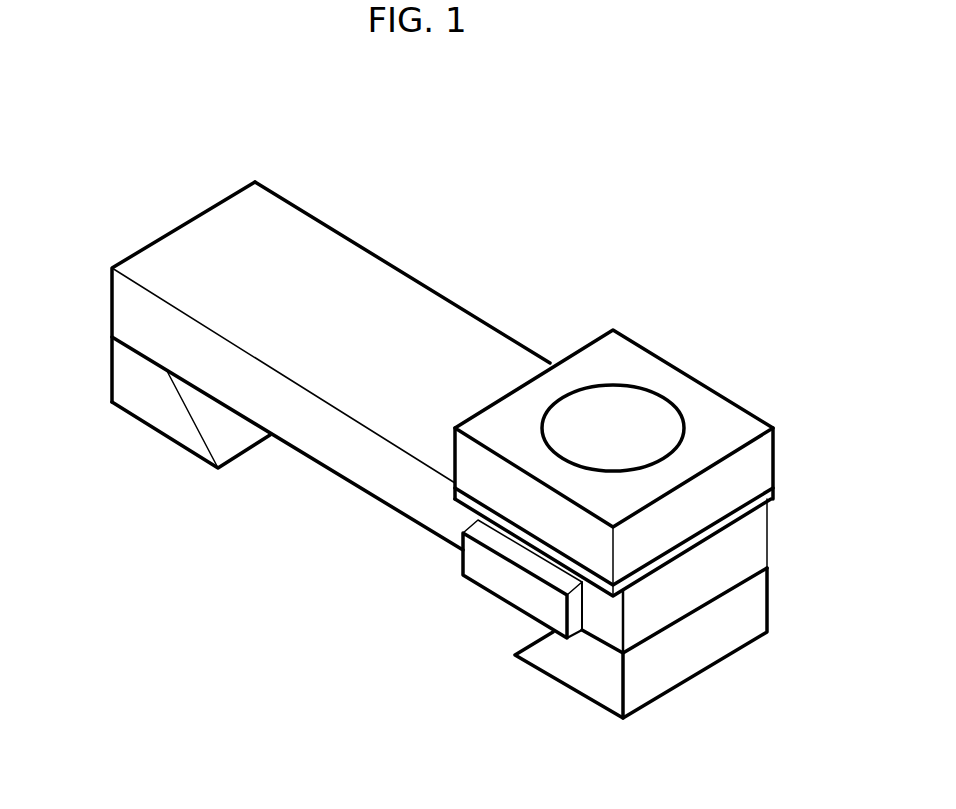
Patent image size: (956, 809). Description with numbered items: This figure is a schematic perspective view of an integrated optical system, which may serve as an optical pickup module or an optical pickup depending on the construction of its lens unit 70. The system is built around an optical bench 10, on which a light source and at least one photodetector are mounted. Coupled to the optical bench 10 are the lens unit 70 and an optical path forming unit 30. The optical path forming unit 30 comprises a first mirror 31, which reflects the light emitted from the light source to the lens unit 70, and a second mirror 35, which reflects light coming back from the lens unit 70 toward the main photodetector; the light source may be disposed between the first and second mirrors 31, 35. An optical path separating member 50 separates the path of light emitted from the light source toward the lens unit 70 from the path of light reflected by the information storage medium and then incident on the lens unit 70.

The optical bench 10 is at (427, 258).
The optical path forming unit 30 is at (200, 533).
The first mirror 31 is at (527, 642).
The second mirror 35 is at (225, 432).
The optical path separating member 50 is at (513, 585).
The lens unit 70 is at (713, 423).